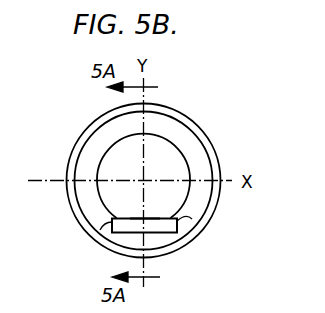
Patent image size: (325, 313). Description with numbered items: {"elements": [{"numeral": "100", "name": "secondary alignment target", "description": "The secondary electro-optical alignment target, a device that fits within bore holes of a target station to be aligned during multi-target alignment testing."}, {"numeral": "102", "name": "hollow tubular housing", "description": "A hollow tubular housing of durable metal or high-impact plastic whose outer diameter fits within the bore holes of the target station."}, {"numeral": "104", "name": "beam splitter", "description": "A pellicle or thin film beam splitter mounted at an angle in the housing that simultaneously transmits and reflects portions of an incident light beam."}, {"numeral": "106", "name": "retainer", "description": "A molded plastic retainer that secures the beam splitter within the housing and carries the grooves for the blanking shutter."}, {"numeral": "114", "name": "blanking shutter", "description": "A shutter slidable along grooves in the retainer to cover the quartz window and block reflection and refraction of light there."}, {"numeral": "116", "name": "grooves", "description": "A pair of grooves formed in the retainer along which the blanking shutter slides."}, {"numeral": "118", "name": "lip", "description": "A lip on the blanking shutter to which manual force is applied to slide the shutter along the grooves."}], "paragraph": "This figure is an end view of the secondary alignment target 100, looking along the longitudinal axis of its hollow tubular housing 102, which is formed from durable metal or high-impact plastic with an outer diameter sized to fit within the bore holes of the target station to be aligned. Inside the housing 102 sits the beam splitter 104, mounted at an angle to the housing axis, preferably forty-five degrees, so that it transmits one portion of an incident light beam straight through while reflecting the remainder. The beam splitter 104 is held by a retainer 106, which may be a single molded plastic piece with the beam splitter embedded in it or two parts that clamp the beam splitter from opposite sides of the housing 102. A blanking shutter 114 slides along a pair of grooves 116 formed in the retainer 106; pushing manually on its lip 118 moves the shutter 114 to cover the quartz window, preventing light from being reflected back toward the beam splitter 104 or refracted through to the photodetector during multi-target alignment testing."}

The assembly 100 is at (140, 175).
The outer housing 102 is at (193, 122).
The inner bore 104 is at (104, 191).
The annular wall 106 is at (191, 147).
The flat surface 114 is at (155, 217).
The bar 116 is at (173, 233).
The end portions 118 is at (101, 228).